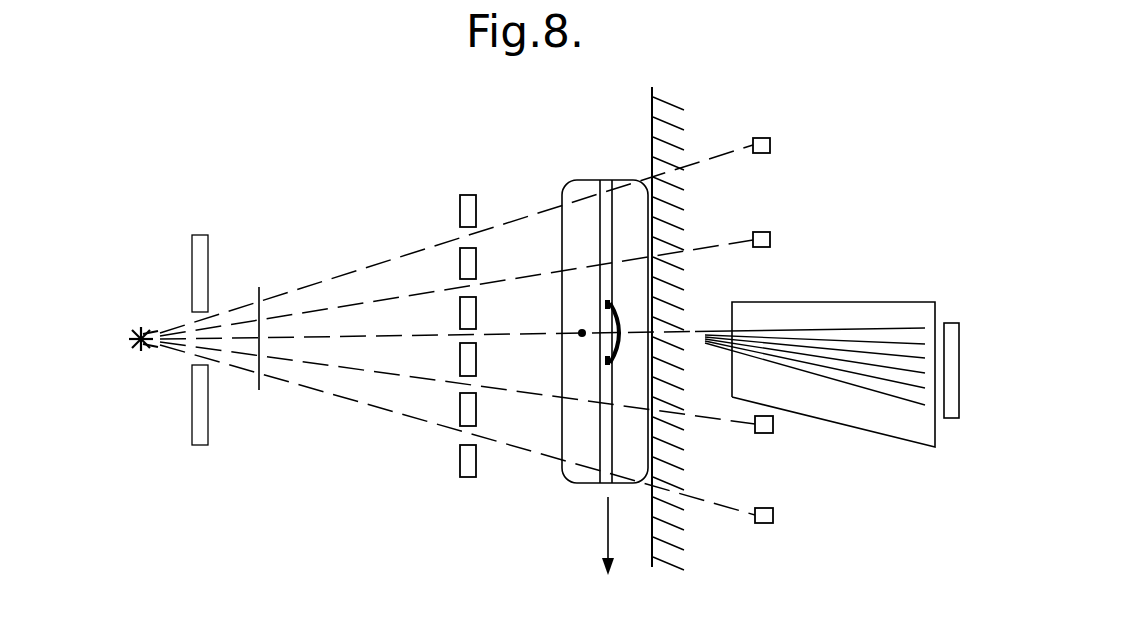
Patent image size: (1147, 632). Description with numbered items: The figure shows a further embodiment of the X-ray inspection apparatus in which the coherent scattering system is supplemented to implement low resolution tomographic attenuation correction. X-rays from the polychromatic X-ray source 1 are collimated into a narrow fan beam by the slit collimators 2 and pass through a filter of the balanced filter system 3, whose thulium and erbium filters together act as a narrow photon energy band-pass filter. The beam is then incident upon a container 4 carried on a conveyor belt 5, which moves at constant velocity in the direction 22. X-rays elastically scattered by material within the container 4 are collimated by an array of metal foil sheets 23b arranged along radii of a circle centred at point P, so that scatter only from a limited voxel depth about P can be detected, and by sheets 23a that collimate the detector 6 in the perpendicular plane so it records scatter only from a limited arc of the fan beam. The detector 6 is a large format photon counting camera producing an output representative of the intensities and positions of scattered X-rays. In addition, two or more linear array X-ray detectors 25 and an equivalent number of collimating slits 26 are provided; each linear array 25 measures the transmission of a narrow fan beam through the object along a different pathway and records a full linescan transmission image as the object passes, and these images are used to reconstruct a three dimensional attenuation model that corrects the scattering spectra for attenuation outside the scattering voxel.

The polychromatic X-ray source 1 is at (143, 331).
The slit collimators 2 is at (210, 280).
The balanced filter system 3 is at (261, 292).
The container 4 is at (593, 180).
The conveyor belt 5 is at (680, 74).
The detector 6 is at (949, 418).
The direction of conveyor movement 22 is at (606, 538).
The collimating sheets 23a is at (803, 317).
The array of metal foil sheets 23b is at (893, 327).
The linear array X-ray detectors 25 is at (764, 553).
The collimating slits 26 is at (463, 178).